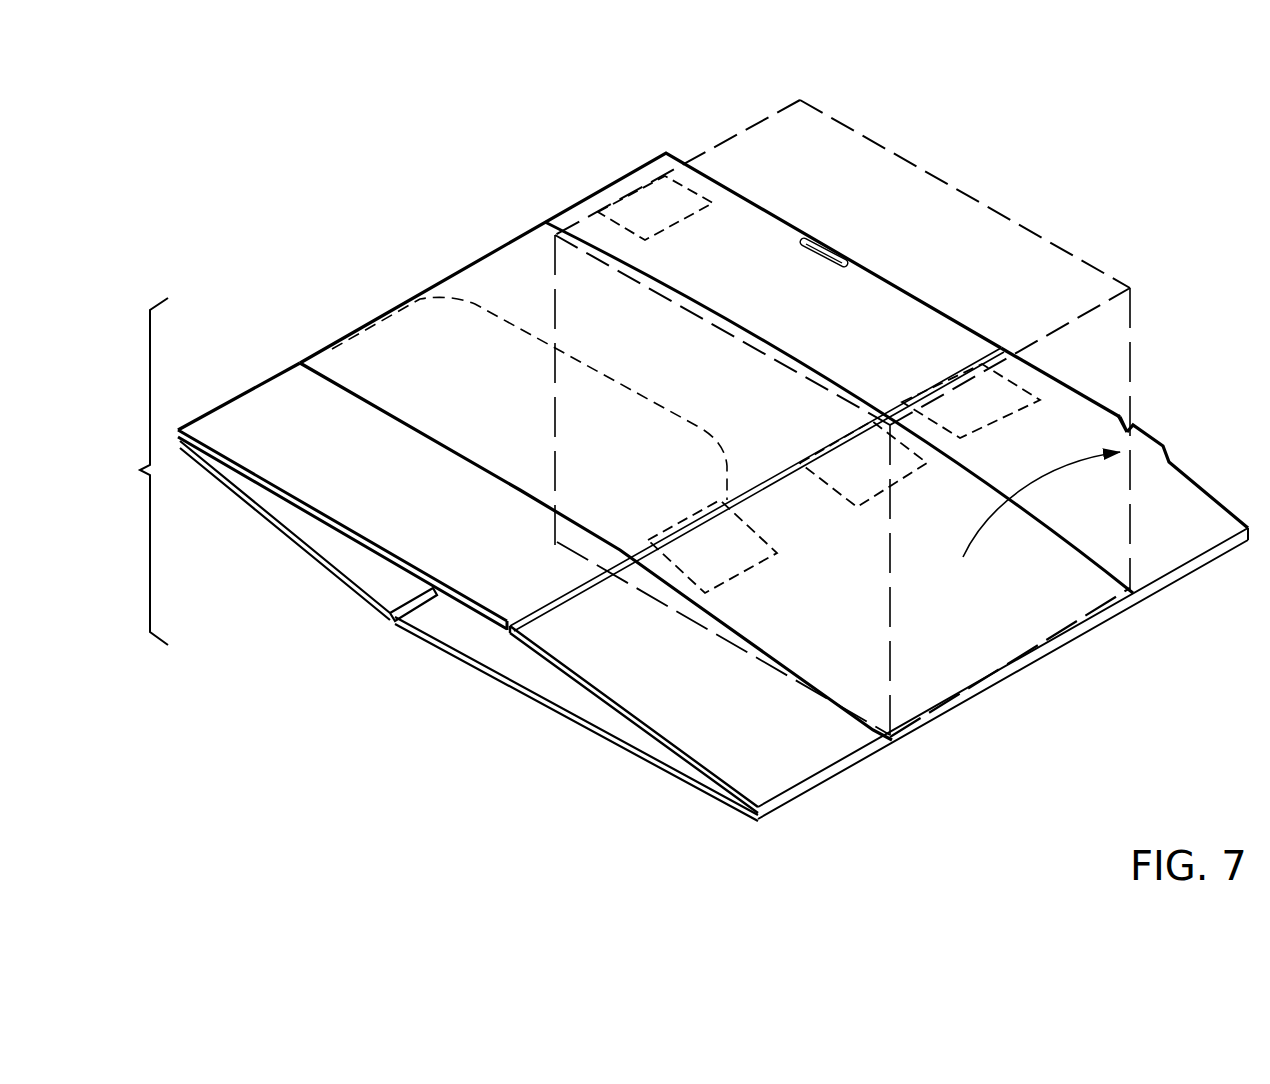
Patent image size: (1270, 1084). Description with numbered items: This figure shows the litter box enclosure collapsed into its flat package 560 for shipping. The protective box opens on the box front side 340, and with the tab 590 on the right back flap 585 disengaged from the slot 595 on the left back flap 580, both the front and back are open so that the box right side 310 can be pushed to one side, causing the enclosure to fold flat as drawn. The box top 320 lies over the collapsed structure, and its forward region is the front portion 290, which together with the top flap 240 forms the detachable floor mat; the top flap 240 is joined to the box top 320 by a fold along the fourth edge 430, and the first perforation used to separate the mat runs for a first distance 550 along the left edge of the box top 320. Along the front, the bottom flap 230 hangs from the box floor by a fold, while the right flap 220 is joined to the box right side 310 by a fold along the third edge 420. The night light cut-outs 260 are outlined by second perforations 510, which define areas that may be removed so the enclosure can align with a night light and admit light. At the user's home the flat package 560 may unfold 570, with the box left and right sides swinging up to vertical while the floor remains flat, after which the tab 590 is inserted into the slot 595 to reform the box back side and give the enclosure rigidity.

The right flap 220 is at (372, 571).
The bottom flap 230 is at (548, 686).
The top flap 240 is at (248, 413).
The night light cut-outs 260 is at (720, 540).
The front portion of the box top 290 is at (422, 347).
The box right side 310 is at (983, 655).
The box top 320 is at (543, 237).
The box front side 340 is at (413, 655).
The third edge 420 is at (887, 733).
The fourth edge 430 is at (352, 390).
The second perforations 510 is at (965, 420).
The first distance 550 is at (500, 322).
The flat package 560 is at (117, 471).
The unfold 570 is at (1017, 490).
The left back flap 580 is at (683, 178).
The right back flap 585 is at (1077, 410).
The tab 590 is at (1152, 442).
The slot 595 is at (817, 253).